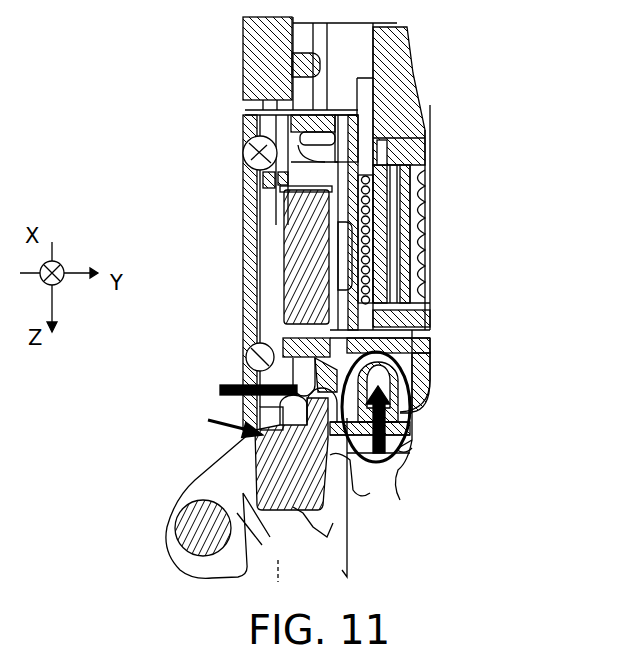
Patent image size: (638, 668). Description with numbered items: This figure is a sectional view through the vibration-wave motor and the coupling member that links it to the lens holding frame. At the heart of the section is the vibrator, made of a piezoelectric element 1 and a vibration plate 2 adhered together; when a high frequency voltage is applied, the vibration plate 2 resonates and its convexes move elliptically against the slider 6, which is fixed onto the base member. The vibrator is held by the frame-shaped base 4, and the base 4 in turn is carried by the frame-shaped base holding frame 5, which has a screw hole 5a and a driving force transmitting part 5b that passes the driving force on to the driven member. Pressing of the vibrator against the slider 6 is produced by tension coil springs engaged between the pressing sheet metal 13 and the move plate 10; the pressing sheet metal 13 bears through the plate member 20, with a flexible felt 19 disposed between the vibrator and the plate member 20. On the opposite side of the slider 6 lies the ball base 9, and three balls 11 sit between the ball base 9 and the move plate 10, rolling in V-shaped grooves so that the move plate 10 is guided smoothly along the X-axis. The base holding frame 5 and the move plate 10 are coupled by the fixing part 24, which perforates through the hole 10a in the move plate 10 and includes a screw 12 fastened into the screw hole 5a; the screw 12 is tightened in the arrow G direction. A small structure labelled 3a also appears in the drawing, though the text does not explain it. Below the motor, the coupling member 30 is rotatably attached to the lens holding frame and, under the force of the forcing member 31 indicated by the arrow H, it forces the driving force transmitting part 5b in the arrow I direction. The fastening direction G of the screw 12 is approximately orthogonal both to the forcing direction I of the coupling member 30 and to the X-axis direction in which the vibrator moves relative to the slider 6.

The piezoelectric element 1 is at (420, 337).
The vibration plate 2 is at (395, 376).
The bobbin flange 3a is at (330, 250).
The base 4 is at (410, 155).
The base holding frame 5 is at (420, 410).
The screw hole 5a is at (420, 416).
The driving force transmitting part 5b is at (363, 462).
The slider 6 is at (293, 258).
The ball base 9 is at (283, 340).
The move plate 10 is at (250, 262).
The hole 10a is at (420, 450).
The balls 11 is at (254, 149).
The screw 12 is at (427, 470).
The pressing sheet metal 13 is at (420, 292).
The flexible felt 19 is at (383, 232).
The plate member 20 is at (397, 183).
The fixing part 24 is at (420, 428).
The coupling member 30 is at (333, 523).
The forcing member 31 is at (257, 512).
The arrow G direction G is at (397, 465).
The arrow H is at (225, 423).
The arrow I direction I is at (220, 386).